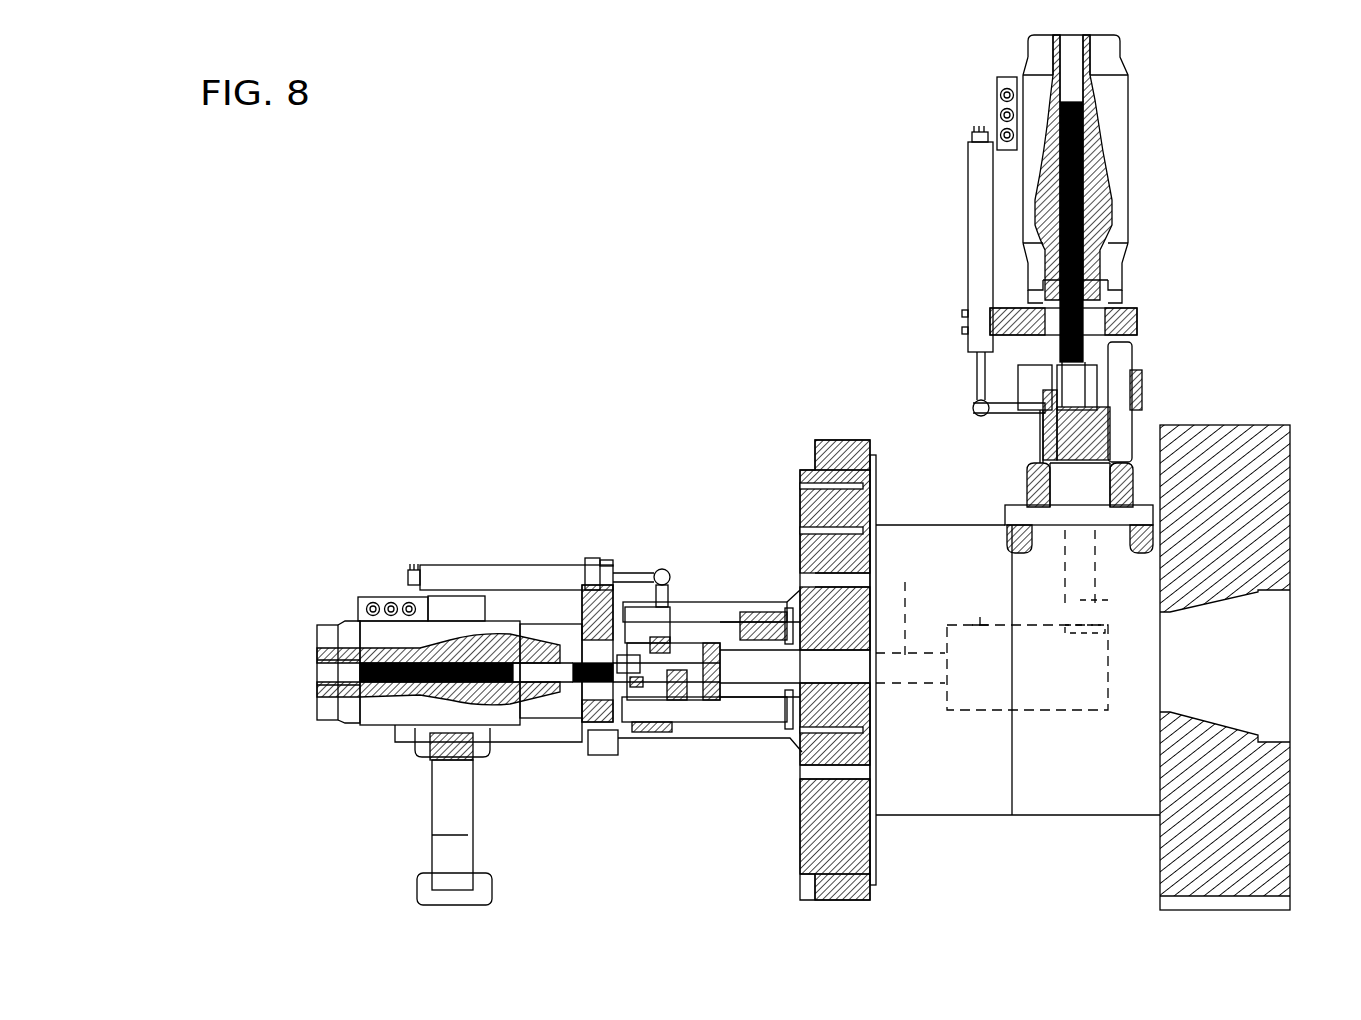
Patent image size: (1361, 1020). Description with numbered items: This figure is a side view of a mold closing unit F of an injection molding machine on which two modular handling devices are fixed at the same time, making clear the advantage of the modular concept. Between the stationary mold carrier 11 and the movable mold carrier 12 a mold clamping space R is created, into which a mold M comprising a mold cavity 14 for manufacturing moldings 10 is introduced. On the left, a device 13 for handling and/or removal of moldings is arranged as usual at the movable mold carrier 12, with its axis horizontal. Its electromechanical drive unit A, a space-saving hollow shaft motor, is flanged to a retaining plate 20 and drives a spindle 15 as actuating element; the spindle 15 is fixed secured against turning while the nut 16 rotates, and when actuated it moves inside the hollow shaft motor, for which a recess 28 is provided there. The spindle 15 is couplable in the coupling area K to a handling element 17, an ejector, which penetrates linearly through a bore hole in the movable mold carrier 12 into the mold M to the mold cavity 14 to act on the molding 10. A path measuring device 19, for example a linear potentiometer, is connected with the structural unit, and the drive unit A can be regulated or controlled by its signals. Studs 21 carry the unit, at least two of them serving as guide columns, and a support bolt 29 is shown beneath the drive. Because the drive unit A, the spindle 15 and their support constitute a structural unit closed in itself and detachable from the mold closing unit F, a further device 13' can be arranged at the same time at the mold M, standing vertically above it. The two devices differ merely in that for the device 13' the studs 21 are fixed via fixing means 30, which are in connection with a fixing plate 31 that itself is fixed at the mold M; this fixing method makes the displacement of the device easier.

The molding 10 is at (1058, 677).
The stationary mold carrier 11 is at (1255, 445).
The movable mold carrier 12 is at (862, 452).
The device for handling and/or removal of moldings 13 is at (549, 494).
The further device 13' is at (1200, 174).
The mold cavity 14 is at (980, 595).
The spindle 15 is at (355, 703).
The nut 16 is at (541, 703).
The handling element 17 is at (904, 592).
The path measuring device 19 is at (455, 575).
The retaining plate 20 is at (603, 755).
The studs 21 is at (690, 640).
The recess 28 is at (335, 675).
The support bolt 29 is at (570, 738).
The fixing means 30 is at (1035, 485).
The fixing plate 31 is at (1075, 510).
The drive unit A is at (363, 635).
The coupling area K is at (680, 712).
The mold M is at (950, 778).
The mold clamping space R is at (920, 857).
The mold closing unit F is at (1052, 832).